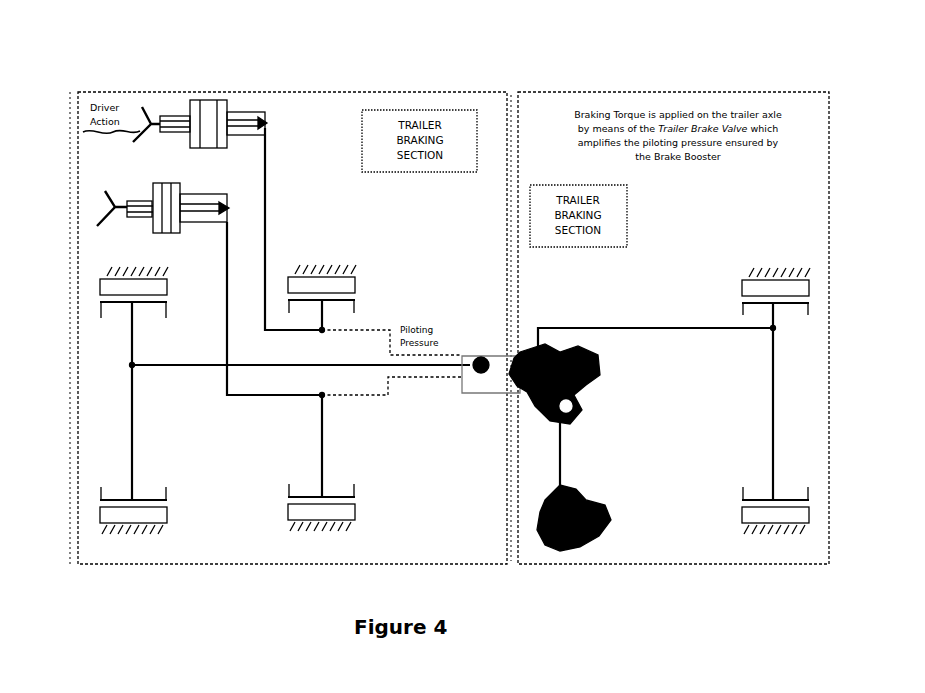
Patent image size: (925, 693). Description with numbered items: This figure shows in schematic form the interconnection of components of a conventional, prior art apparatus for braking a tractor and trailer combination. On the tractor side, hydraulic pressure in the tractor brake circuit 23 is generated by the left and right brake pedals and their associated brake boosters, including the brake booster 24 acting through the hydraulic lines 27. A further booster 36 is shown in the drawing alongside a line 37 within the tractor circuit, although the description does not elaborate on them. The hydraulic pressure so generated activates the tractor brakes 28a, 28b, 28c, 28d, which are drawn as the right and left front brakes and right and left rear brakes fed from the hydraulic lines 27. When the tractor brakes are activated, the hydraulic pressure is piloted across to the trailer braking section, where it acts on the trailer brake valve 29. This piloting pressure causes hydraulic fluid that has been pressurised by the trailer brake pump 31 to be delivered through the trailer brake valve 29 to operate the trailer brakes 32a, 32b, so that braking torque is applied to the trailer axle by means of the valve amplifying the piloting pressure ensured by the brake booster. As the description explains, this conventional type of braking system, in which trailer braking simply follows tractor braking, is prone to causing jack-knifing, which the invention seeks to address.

The tractor brake circuit 23 is at (80, 490).
The brake booster 24 is at (186, 190).
The hydraulic lines 27 is at (236, 397).
The tractor brake 28a is at (167, 297).
The tractor brake 28b is at (356, 286).
The tractor brake 28c is at (162, 514).
The tractor brake 28d is at (355, 508).
The trailer brake valve 29 is at (598, 383).
The trailer brake pump 31 is at (600, 511).
The trailer brake 32a is at (742, 291).
The trailer brake 32b is at (745, 510).
The RH brake booster 36 is at (219, 110).
The hydraulic line to RH brakes 37 is at (267, 244).